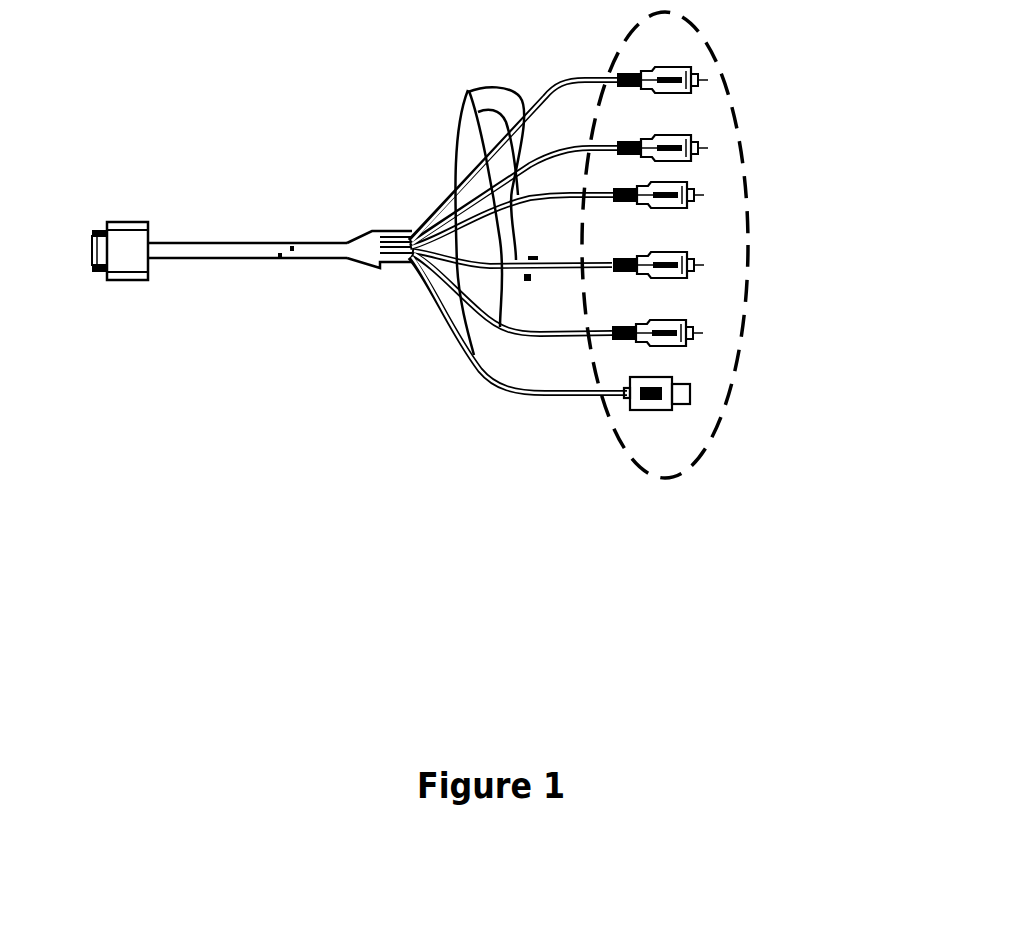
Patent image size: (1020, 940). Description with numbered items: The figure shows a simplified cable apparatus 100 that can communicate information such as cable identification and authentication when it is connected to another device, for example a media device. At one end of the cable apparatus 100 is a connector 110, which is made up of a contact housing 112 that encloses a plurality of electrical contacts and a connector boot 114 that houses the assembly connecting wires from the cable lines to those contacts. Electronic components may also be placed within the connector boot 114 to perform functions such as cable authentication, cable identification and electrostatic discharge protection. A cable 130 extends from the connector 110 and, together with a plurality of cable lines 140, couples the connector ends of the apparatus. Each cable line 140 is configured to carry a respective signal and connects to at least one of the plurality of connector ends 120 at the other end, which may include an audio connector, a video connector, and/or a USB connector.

The cable apparatus 100 is at (730, 517).
The connector 110 is at (125, 216).
The contact housing 112 is at (92, 272).
The connector boot 114 is at (127, 253).
The connector ends 120 is at (746, 242).
The cable 130 is at (243, 242).
The cable lines 140 is at (486, 202).